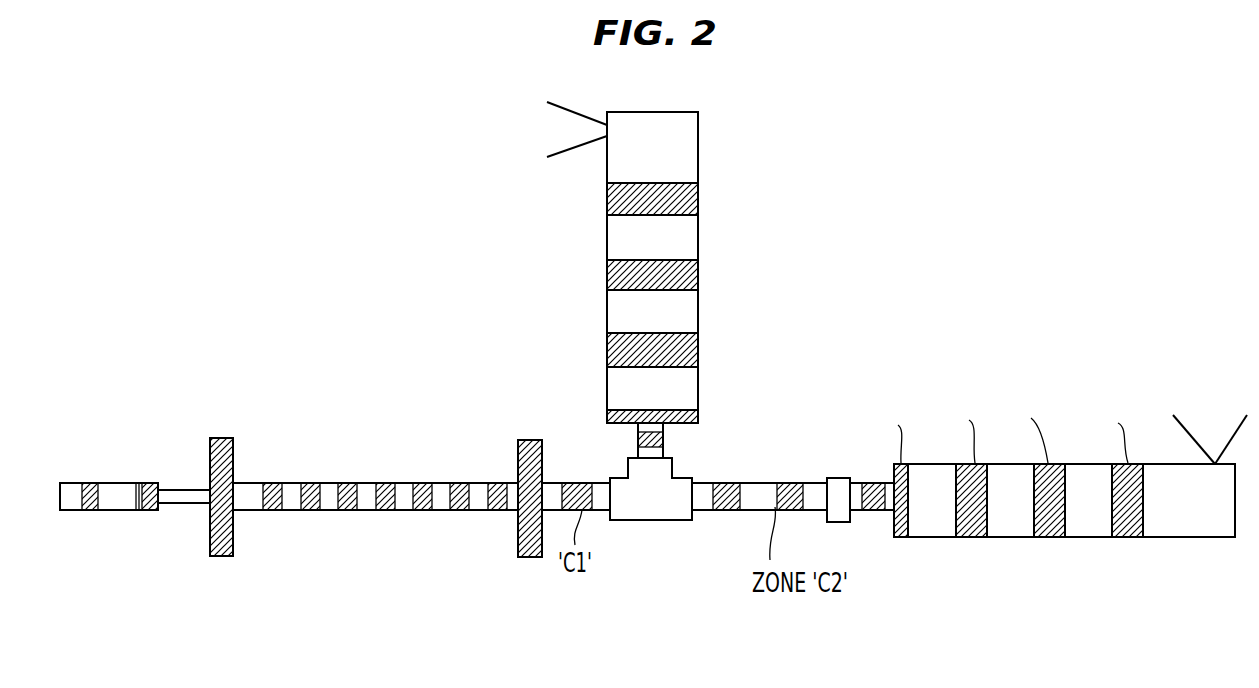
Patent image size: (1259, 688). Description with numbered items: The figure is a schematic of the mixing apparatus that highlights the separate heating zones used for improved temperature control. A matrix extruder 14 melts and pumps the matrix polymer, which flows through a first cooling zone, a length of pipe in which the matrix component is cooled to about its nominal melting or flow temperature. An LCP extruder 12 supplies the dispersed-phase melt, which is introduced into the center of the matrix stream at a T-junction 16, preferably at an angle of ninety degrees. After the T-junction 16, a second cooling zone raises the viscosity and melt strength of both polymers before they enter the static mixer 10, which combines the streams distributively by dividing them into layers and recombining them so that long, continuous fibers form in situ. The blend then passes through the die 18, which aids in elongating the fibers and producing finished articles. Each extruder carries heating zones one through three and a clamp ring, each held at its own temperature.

The static mixer 10 is at (376, 510).
The first extruder 12 is at (682, 237).
The second extruder 14 is at (1082, 518).
The T-junction 16 is at (647, 508).
The extrusion die 18 is at (127, 503).